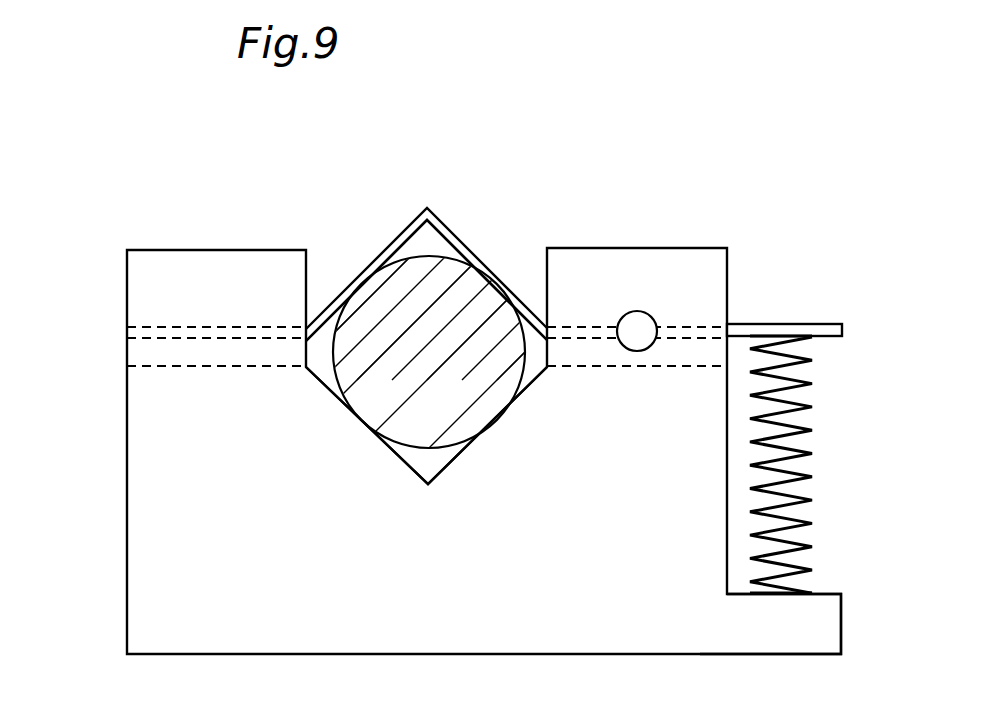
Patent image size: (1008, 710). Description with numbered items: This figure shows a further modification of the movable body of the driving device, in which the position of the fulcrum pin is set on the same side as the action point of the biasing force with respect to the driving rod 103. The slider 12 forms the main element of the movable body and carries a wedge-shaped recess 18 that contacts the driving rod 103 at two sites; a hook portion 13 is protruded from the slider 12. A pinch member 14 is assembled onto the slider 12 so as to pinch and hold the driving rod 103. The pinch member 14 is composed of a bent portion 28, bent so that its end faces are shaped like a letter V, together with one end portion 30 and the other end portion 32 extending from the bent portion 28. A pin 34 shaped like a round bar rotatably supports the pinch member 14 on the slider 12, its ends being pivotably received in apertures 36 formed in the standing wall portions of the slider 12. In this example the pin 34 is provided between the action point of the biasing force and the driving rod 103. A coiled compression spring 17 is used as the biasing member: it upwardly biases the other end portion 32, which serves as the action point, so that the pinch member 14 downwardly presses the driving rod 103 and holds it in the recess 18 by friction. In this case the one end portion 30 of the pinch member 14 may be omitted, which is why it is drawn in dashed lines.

The slider 12 is at (116, 579).
The hook portion 13 is at (806, 655).
The pinch member 14 is at (390, 222).
The coiled compression spring 17 is at (800, 470).
The wedge-shaped recess 18 is at (410, 467).
The bent portion 28 is at (485, 251).
The one end portion 30 is at (158, 338).
The other end portion 32 is at (817, 325).
The pin 34 is at (637, 328).
The apertures 36 is at (657, 322).
The driving rod 103 is at (428, 257).